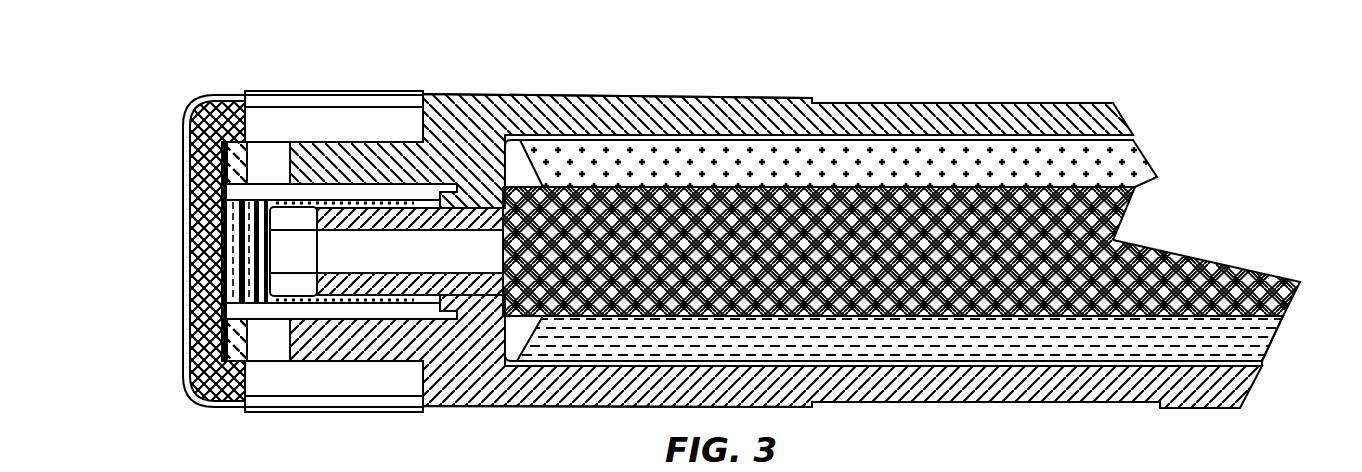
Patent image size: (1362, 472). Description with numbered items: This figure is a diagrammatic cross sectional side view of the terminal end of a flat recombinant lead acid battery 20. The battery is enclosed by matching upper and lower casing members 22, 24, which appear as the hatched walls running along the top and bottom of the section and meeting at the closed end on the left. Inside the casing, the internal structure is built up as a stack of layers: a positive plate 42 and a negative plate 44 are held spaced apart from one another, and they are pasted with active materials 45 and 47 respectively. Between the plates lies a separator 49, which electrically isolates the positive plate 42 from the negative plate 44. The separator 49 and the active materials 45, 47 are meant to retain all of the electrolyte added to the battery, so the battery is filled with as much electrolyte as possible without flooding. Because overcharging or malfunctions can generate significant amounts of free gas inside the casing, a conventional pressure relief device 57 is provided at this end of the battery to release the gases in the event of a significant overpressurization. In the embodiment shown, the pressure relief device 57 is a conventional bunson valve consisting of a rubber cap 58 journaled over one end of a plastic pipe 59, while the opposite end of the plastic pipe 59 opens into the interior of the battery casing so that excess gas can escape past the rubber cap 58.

The flat recombinant lead acid battery 20 is at (744, 78).
The upper casing member 22 is at (882, 108).
The lower casing member 24 is at (935, 393).
The positive plate 42 is at (940, 137).
The negative plate 44 is at (1013, 366).
The active material 45 is at (1122, 160).
The active material 47 is at (1253, 347).
The separator 49 is at (1230, 265).
The pressure relief device 57 is at (323, 310).
The rubber cap 58 is at (185, 257).
The plastic pipe 59 is at (370, 220).